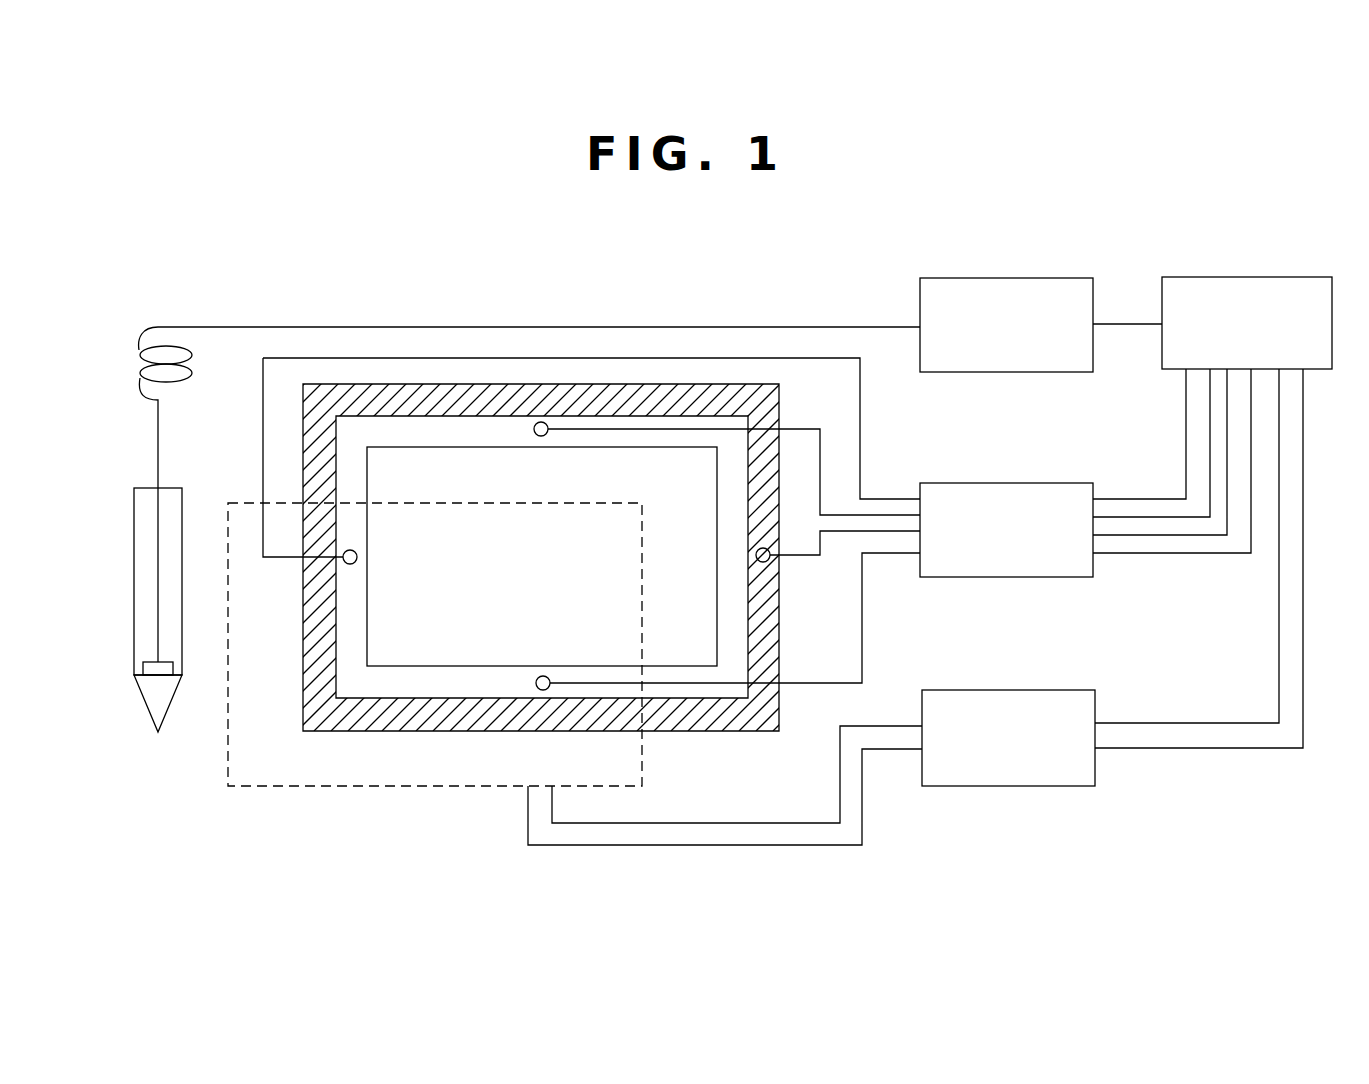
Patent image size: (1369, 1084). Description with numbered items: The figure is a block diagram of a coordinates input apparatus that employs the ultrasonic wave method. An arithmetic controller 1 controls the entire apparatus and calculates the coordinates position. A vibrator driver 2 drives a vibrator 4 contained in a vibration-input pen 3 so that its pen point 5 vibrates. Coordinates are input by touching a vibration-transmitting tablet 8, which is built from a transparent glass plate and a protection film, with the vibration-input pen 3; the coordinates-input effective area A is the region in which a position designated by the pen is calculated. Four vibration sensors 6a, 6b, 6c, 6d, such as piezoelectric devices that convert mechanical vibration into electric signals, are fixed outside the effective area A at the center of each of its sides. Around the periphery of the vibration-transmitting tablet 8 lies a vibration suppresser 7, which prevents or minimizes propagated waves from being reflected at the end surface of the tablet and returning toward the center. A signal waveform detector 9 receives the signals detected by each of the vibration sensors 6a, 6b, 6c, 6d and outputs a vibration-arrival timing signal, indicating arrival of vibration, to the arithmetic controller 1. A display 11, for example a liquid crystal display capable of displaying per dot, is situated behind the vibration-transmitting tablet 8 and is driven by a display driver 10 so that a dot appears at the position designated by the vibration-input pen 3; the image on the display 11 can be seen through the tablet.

The arithmetic controller 1 is at (1205, 277).
The vibrator driver 2 is at (997, 278).
The vibration-input pen 3 is at (170, 488).
The vibrator 4 is at (163, 662).
The pen point 5 is at (168, 709).
The vibration sensor 6a is at (357, 557).
The vibration sensor 6b is at (756, 555).
The vibration sensor 6c is at (541, 437).
The vibration sensor 6d is at (543, 676).
The vibration suppresser 7 is at (632, 384).
The vibration-transmitting tablet 8 is at (468, 428).
The signal waveform detector 9 is at (997, 483).
The display driver 10 is at (997, 690).
The display 11 is at (450, 787).
The coordinates-input effective area A is at (420, 668).